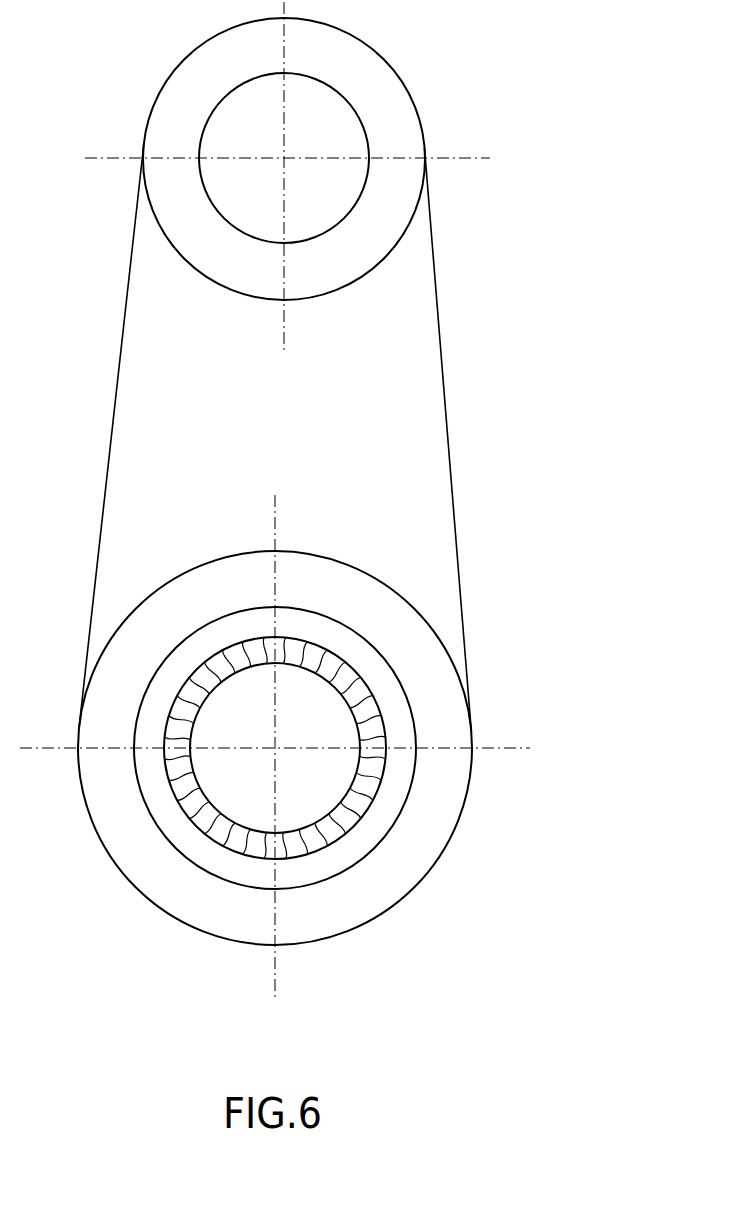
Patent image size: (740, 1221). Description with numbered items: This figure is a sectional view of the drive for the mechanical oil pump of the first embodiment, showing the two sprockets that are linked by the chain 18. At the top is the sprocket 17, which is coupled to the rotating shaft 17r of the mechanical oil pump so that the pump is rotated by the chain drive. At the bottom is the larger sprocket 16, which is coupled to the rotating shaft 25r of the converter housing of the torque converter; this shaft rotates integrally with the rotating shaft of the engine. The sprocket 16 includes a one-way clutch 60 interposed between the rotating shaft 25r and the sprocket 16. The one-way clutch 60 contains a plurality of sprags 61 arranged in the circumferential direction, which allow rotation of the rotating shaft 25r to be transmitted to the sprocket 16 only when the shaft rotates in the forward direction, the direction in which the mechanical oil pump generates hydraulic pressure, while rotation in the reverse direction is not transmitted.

The sprocket 17 is at (400, 70).
The rotating shaft of the mechanical oil pump 17r is at (363, 198).
The chain 18 is at (450, 455).
The sprocket 16 is at (447, 850).
The one-way clutch 60 is at (362, 672).
The sprags 61 is at (378, 715).
The rotating shaft of the converter housing 25r is at (318, 792).